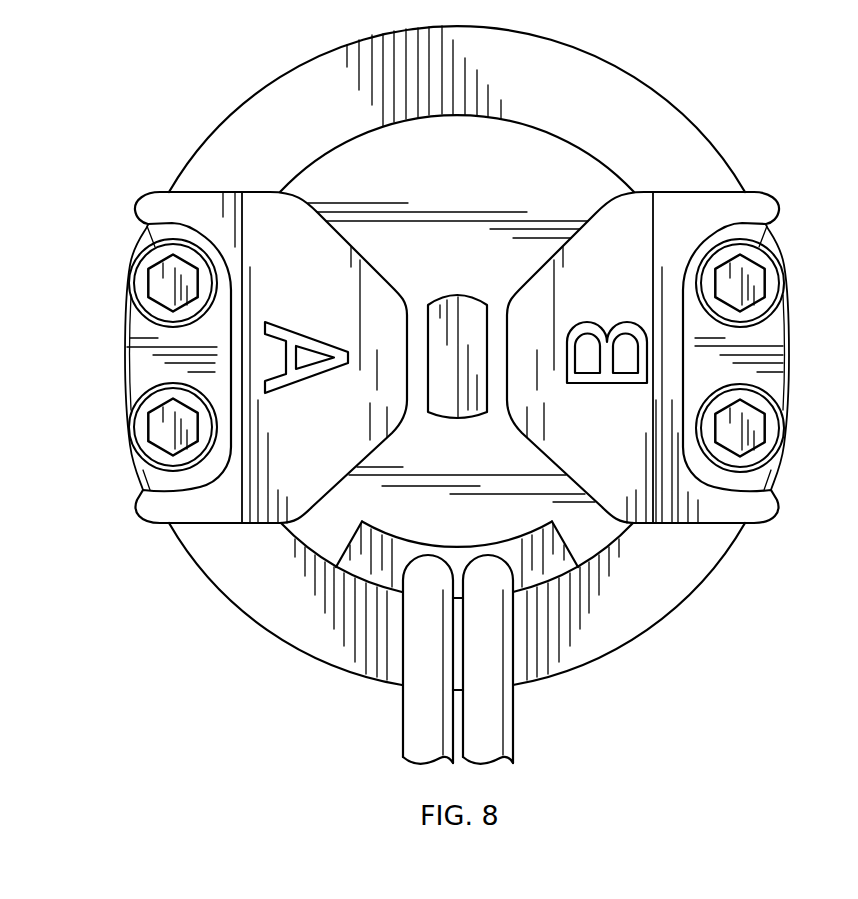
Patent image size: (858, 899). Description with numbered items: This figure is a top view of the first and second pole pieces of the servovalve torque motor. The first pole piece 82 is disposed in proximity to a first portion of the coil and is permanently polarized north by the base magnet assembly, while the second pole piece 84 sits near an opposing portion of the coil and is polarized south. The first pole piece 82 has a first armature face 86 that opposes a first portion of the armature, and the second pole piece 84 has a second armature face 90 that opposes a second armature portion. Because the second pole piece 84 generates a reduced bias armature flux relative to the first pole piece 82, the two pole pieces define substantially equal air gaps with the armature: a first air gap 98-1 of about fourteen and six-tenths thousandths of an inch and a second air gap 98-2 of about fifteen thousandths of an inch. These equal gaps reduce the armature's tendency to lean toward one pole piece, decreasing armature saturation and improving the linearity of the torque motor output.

The first pole piece 82 is at (660, 190).
The second pole piece 84 is at (262, 191).
The first armature face 86 is at (509, 400).
The second armature face 90 is at (405, 400).
The first air gap 98-1 is at (522, 303).
The second air gap 98-2 is at (392, 303).